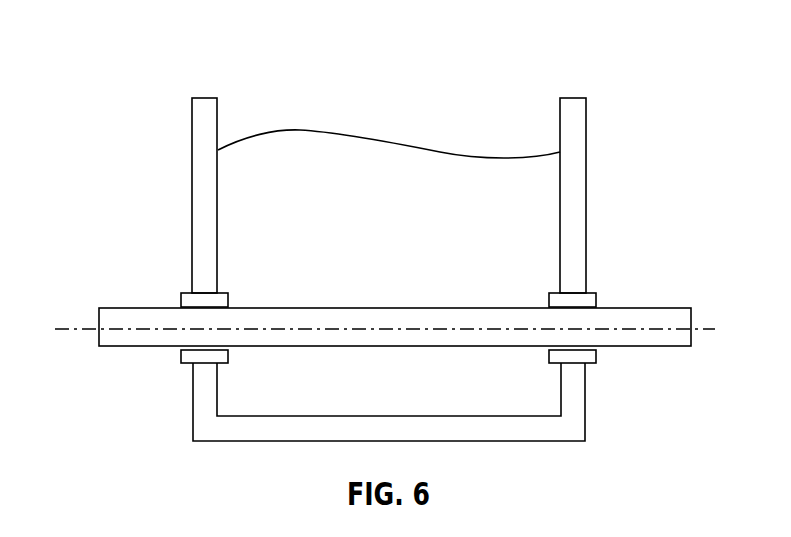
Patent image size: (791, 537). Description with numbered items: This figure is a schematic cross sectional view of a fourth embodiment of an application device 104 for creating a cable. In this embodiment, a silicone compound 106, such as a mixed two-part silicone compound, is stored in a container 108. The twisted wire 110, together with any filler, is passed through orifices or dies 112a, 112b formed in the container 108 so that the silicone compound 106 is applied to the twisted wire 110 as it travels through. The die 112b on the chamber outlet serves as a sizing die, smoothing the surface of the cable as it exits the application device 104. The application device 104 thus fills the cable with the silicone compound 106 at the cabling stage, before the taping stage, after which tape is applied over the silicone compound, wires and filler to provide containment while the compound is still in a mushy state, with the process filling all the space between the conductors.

The application device 104 is at (136, 94).
The silicone compound 106 is at (408, 143).
The container 108 is at (575, 188).
The twisted wire 110 is at (662, 309).
The orifice or die 112a is at (181, 356).
The orifice or die 112b is at (597, 357).